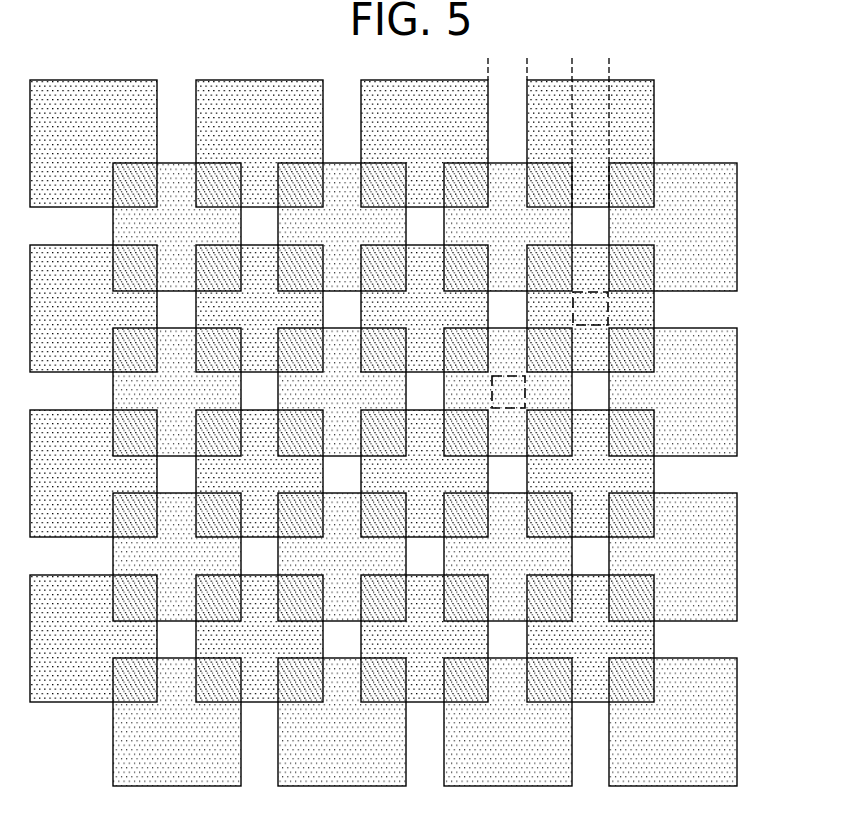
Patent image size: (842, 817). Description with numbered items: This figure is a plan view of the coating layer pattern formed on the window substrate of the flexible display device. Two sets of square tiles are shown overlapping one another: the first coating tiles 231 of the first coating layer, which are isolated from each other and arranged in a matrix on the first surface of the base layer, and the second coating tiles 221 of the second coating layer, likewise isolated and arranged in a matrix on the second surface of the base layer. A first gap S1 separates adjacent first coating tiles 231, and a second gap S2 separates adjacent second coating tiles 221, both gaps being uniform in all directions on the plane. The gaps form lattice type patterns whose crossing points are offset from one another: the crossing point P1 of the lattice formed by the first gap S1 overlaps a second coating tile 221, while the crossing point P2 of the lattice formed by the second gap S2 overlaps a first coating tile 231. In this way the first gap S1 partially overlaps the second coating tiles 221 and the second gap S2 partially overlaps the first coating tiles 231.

The second coating tile 221 is at (654, 107).
The first coating tile 231 is at (737, 195).
The crossing point P1 is at (608, 303).
The crossing point P2 is at (525, 385).
The first gap S1 is at (609, 64).
The second gap S2 is at (527, 64).